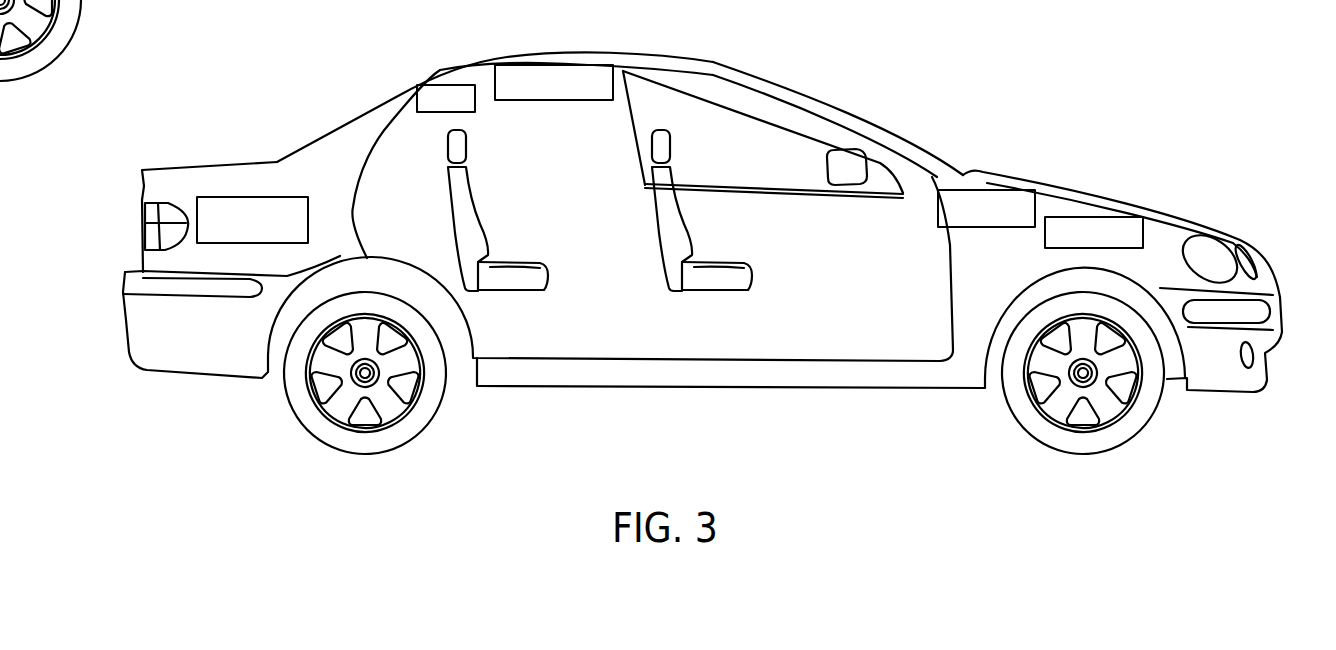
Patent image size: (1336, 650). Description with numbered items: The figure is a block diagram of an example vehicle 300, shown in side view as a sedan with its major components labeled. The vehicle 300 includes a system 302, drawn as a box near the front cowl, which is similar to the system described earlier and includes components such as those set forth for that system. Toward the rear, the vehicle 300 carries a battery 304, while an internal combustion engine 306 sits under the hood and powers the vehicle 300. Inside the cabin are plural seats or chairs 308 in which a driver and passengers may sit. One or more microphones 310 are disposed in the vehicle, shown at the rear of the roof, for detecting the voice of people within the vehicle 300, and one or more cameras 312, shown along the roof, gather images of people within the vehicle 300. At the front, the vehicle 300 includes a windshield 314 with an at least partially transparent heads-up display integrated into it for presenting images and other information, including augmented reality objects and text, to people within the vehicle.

The vehicle 300 is at (1095, 78).
The system 302 is at (938, 220).
The battery 304 is at (253, 197).
The internal combustion engine 306 is at (1045, 240).
The seats 308 is at (449, 221).
The microphones 310 is at (440, 98).
The cameras 312 is at (552, 103).
The windshield 314 is at (887, 126).